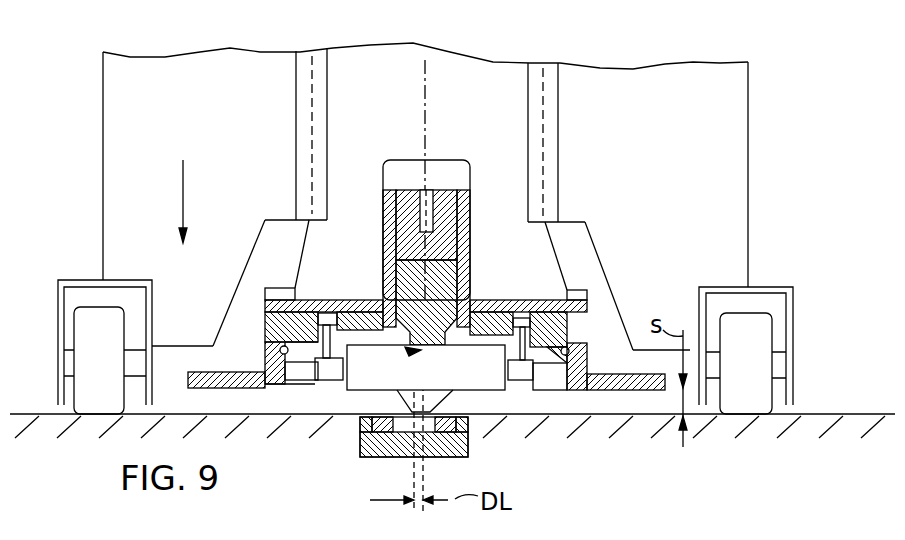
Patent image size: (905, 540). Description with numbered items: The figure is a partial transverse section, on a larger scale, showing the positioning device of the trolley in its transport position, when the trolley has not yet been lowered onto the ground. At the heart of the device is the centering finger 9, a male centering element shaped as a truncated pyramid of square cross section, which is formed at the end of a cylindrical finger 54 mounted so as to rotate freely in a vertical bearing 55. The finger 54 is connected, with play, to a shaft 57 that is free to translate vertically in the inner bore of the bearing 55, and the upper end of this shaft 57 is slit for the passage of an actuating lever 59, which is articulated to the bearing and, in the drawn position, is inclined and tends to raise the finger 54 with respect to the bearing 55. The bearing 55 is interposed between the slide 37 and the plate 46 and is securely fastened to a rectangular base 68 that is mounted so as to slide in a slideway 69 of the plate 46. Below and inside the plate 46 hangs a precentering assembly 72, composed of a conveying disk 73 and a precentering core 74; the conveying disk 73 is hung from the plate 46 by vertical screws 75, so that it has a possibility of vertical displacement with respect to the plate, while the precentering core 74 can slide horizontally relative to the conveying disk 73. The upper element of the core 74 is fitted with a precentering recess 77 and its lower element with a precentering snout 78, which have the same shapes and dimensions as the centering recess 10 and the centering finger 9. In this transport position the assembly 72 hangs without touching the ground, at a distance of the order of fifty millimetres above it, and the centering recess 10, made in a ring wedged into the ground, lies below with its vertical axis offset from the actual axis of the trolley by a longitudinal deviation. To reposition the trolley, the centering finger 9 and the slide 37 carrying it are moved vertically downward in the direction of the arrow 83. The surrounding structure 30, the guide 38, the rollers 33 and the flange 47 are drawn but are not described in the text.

The centering finger 9 is at (458, 355).
The centering recess 10 is at (445, 423).
The frame 30 is at (724, 103).
The roller 33 is at (750, 316).
The slide 37 is at (492, 72).
The guide slot 38 is at (558, 86).
The plate 46 is at (265, 320).
The flange 47 is at (212, 386).
The cylindrical finger 54 is at (450, 277).
The vertical bearing 55 is at (390, 222).
The shaft 57 is at (460, 198).
The actuating lever 59 is at (428, 190).
The base 68 is at (518, 300).
The slideway 69 is at (587, 308).
The precentering assembly 72 is at (500, 392).
The conveying disk 73 is at (300, 383).
The precentering core 74 is at (508, 388).
The vertical screws 75 is at (327, 312).
The precentering recess 77 is at (418, 352).
The precentering snout 78 is at (396, 396).
The arrow 83 is at (183, 180).